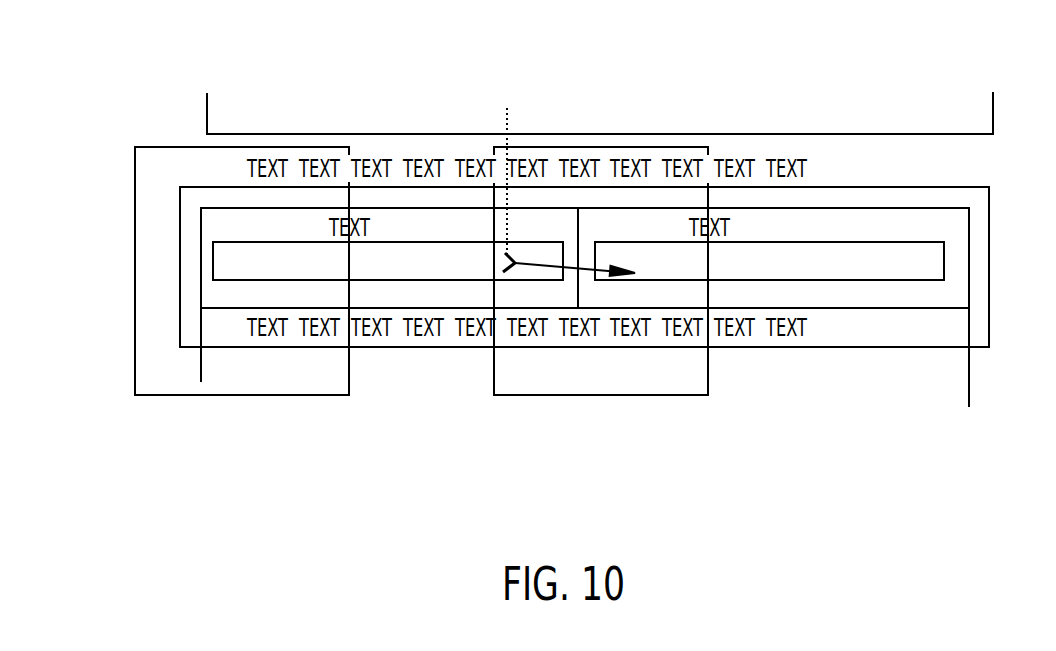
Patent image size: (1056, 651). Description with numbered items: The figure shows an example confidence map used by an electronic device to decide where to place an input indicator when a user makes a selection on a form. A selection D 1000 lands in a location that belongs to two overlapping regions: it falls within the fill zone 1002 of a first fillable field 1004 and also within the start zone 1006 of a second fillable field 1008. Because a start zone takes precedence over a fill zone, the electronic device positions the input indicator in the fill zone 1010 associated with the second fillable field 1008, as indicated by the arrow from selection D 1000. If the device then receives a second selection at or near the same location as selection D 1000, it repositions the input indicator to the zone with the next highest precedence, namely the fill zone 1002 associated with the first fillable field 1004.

The selection D 1000 is at (506, 78).
The fill zone 1002 is at (233, 267).
The first fillable field 1004 is at (225, 237).
The start zone 1006 is at (668, 145).
The second fillable field 1008 is at (890, 242).
The fill zone 1010 is at (910, 267).